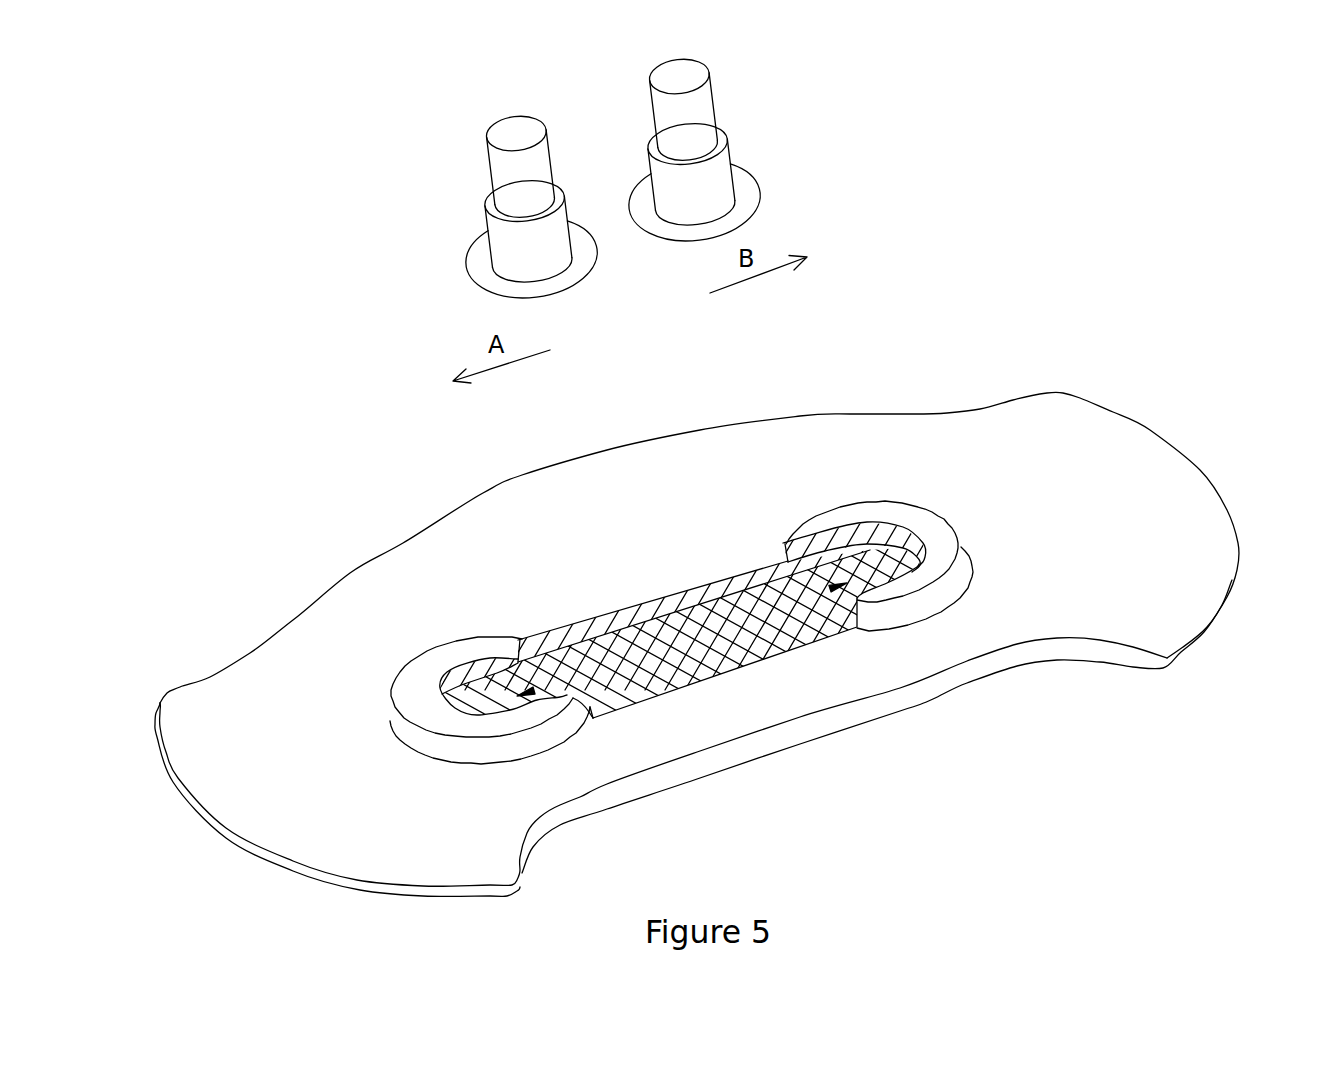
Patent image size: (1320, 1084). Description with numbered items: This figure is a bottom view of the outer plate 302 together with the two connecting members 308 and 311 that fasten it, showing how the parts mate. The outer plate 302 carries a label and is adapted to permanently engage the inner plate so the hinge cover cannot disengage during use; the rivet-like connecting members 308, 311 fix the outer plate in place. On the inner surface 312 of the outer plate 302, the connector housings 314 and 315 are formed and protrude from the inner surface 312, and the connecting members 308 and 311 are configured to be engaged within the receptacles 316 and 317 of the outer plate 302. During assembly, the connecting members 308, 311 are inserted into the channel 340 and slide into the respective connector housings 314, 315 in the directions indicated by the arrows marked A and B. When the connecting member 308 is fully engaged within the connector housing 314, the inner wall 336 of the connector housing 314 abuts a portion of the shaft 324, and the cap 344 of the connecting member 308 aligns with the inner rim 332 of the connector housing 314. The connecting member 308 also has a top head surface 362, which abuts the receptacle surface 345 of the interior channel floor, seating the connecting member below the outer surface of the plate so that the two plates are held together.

The outer plate 302 is at (699, 666).
The connecting member 308 is at (456, 217).
The connecting member 311 is at (770, 100).
The inner surface 312 is at (1123, 485).
The connector housing 314 is at (435, 657).
The connector housing 315 is at (920, 523).
The receptacle 316 is at (618, 707).
The receptacle 317 is at (793, 618).
The shaft 324 is at (497, 227).
The inner rim 332 is at (537, 660).
The inner wall 336 is at (487, 663).
The channel 340 is at (698, 606).
The cap 344 is at (480, 267).
The receptacle surface 345 is at (472, 693).
The top head surface 362 is at (510, 300).